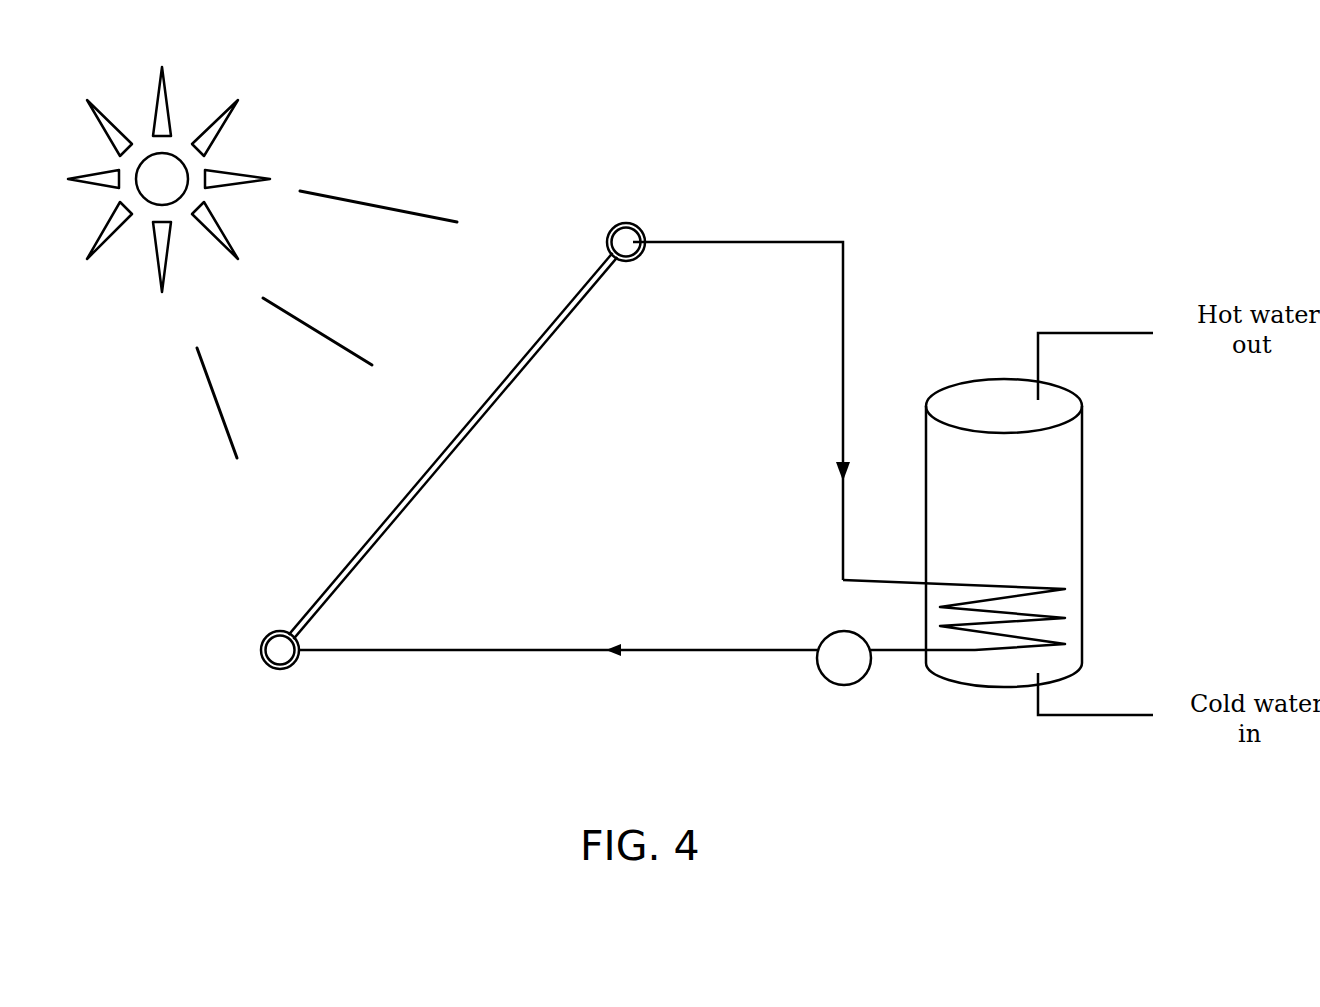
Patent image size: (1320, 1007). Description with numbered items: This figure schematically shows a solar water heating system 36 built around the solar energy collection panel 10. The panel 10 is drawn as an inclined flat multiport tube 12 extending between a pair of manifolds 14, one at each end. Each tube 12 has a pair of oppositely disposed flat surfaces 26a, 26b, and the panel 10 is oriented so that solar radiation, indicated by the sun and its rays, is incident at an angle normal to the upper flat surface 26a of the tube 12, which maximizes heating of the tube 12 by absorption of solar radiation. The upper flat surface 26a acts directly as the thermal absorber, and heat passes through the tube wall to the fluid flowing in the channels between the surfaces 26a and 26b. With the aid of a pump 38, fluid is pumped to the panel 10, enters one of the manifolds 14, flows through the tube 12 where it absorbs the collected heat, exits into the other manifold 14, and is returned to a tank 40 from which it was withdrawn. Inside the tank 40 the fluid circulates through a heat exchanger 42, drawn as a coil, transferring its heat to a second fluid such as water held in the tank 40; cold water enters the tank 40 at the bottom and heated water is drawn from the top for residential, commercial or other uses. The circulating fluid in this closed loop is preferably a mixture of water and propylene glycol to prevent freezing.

The solar energy collection panel 10 is at (455, 431).
The tube 12 is at (477, 446).
The manifold 14 is at (627, 222).
The upper flat surface 26a is at (500, 381).
The lower flat surface 26b is at (498, 403).
The solar water heating system 36 is at (1065, 64).
The pump 38 is at (840, 672).
The tank 40 is at (967, 400).
The heat exchanger 42 is at (1050, 585).